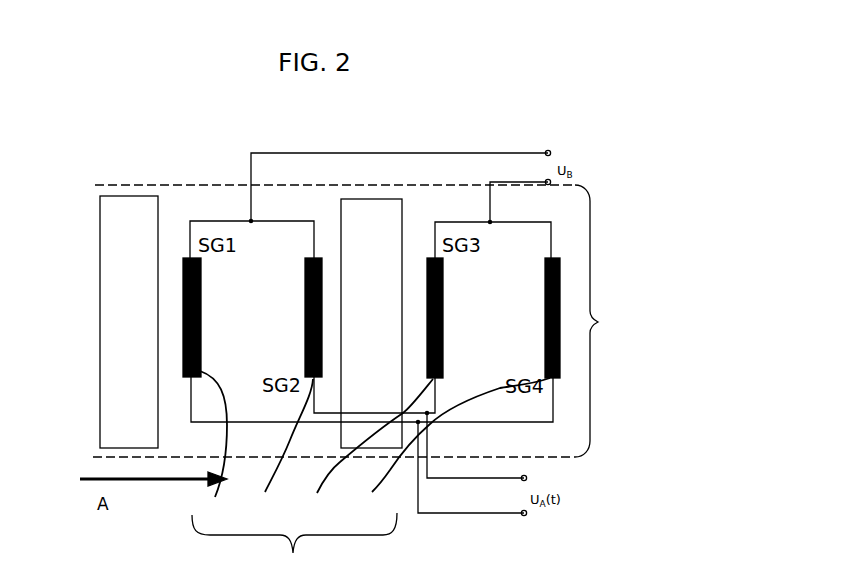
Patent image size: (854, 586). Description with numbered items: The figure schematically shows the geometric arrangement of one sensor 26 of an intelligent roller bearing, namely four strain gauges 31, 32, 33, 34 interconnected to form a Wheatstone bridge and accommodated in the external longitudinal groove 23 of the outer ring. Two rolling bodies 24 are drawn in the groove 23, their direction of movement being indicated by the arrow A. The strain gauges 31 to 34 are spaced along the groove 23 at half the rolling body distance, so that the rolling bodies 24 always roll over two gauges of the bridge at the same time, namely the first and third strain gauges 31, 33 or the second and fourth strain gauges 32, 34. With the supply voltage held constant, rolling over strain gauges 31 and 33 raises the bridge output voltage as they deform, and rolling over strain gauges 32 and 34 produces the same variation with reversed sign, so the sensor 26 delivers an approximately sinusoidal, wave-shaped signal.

The circumferential longitudinal groove 23 is at (363, 321).
The rolling bodies 24 is at (130, 193).
The sensor arrangement 26 is at (294, 549).
The first strain gauge 31 is at (215, 443).
The second strain gauge 32 is at (280, 447).
The third strain gauge 33 is at (367, 447).
The fourth strain gauge 34 is at (448, 447).